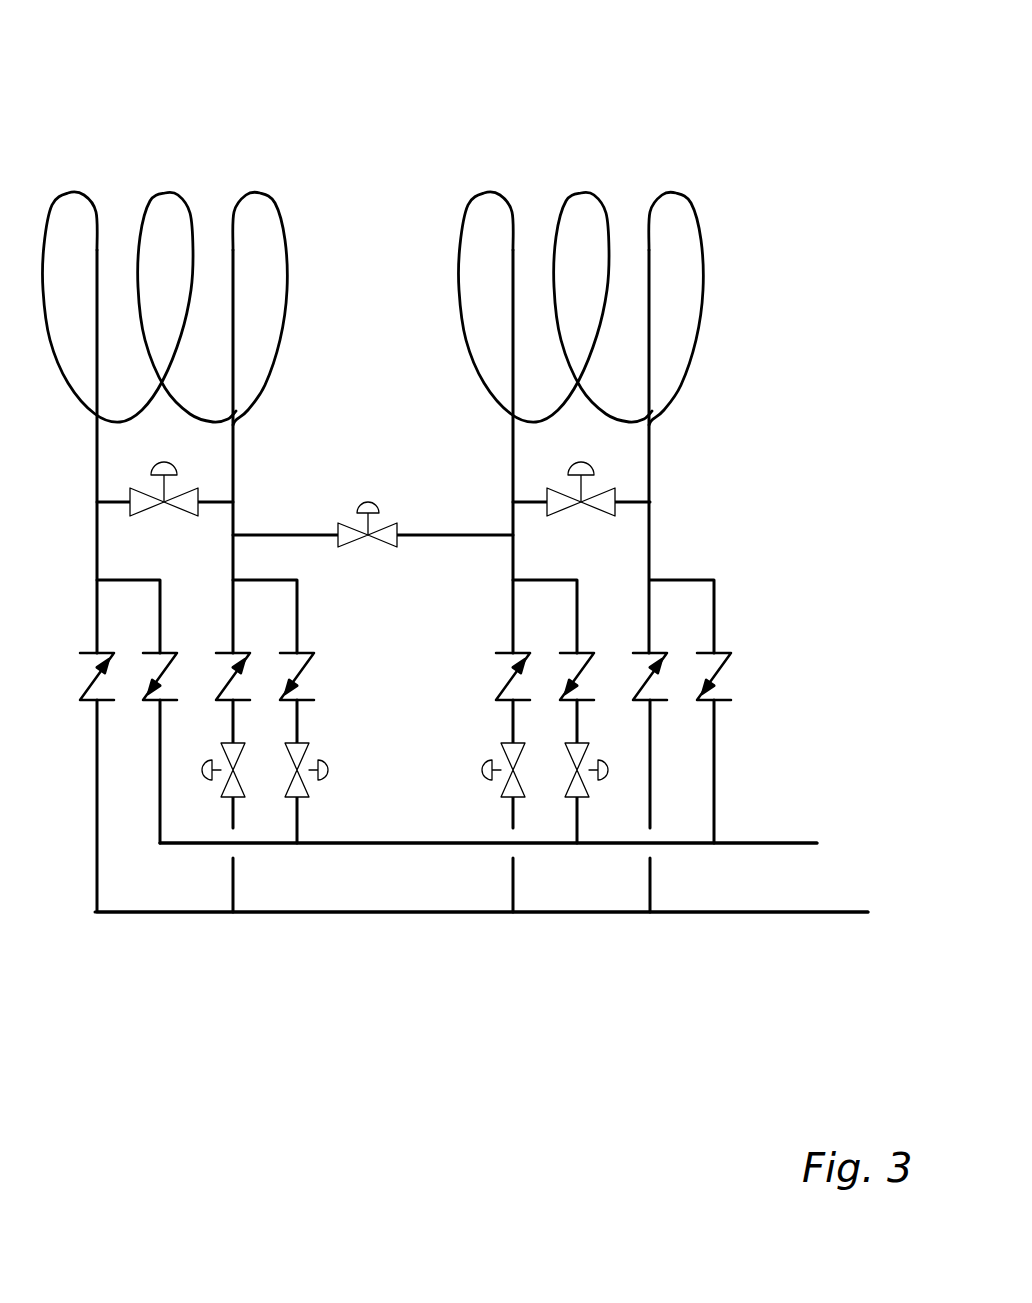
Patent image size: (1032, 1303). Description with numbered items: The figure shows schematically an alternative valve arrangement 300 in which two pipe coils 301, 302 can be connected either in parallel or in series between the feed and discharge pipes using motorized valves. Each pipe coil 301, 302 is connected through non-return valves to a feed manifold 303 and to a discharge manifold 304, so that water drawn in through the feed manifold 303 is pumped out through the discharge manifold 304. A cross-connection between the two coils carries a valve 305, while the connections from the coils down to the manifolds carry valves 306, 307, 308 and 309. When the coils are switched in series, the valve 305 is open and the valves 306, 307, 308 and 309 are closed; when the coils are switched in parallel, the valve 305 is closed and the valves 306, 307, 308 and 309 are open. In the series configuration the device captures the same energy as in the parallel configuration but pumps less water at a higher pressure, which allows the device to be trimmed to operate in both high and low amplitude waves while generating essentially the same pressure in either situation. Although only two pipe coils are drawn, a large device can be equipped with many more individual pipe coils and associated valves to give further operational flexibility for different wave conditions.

The valve arrangement 300 is at (458, 103).
The pipe coil 301 is at (322, 332).
The pipe coil 302 is at (713, 389).
The feed manifold 303 is at (823, 925).
The discharge manifold 304 is at (770, 833).
The valve 305 is at (366, 562).
The valve 306 is at (207, 800).
The valve 307 is at (313, 800).
The valve 308 is at (488, 797).
The valve 309 is at (590, 812).